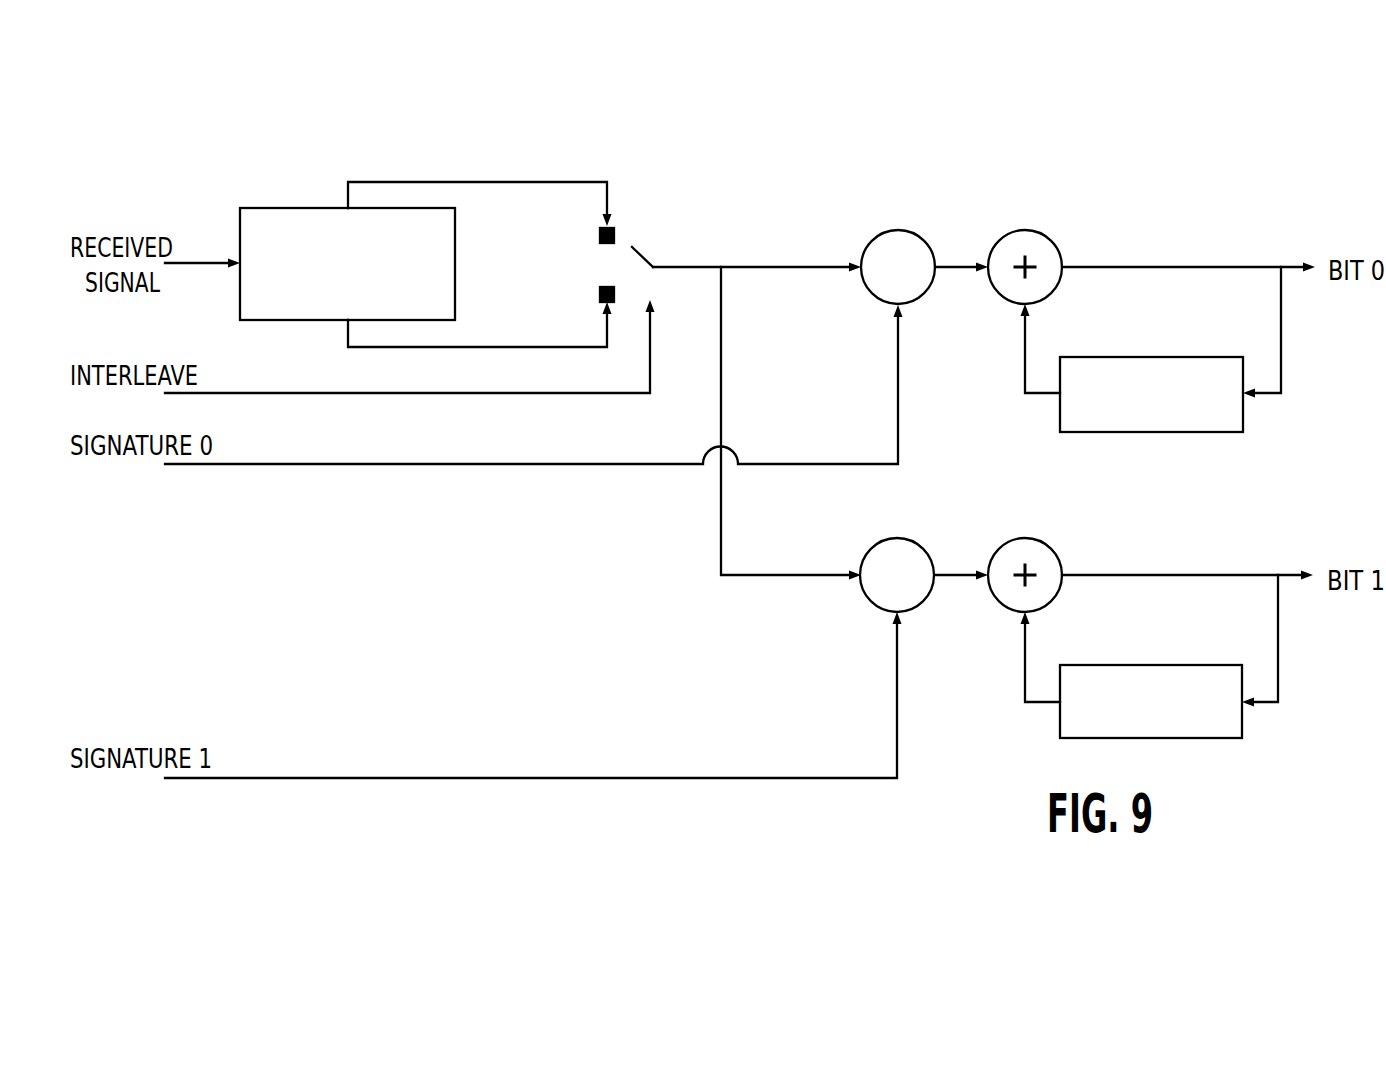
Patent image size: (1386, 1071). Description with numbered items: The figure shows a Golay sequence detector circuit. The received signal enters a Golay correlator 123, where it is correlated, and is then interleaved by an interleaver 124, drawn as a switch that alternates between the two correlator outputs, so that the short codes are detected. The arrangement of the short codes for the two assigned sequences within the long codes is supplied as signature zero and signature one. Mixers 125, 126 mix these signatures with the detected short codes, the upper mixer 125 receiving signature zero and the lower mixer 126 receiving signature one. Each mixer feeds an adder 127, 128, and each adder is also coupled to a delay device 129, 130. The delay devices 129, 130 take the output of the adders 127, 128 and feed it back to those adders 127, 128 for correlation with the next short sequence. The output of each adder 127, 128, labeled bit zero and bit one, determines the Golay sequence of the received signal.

The Golay correlator 123 is at (276, 208).
The interleaver 124 is at (648, 262).
The mixer 125 is at (908, 230).
The mixer 126 is at (903, 538).
The adder 127 is at (1048, 237).
The adder 128 is at (1047, 540).
The delay device 129 is at (1098, 357).
The delay device 130 is at (1100, 665).